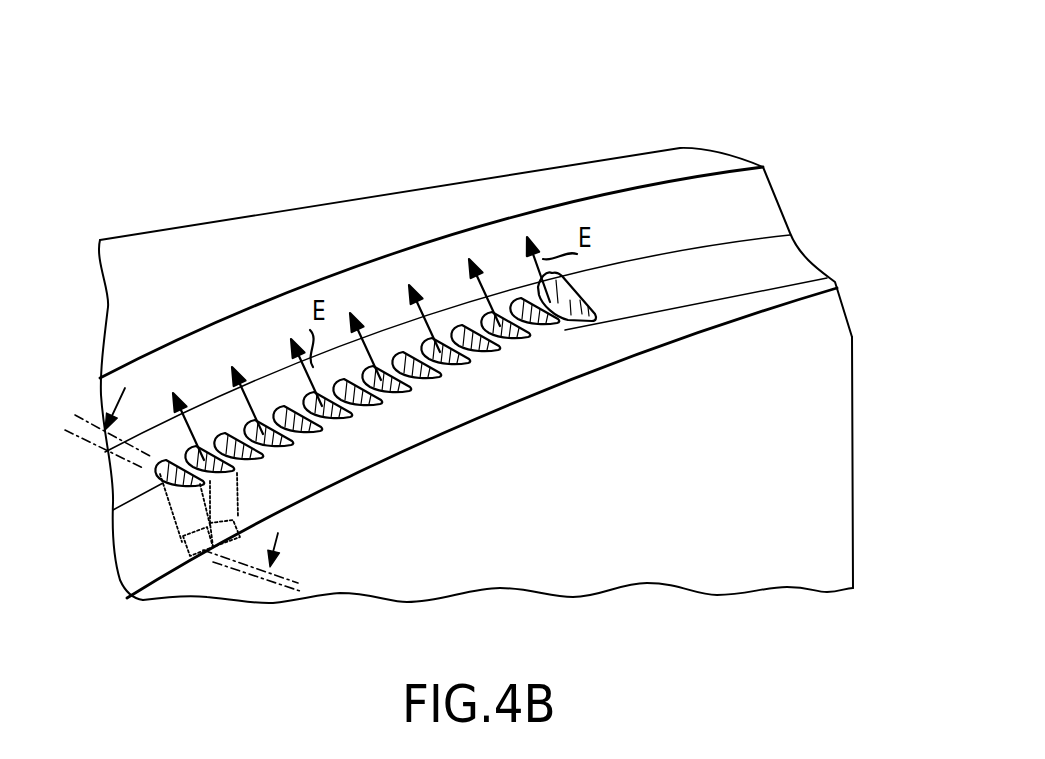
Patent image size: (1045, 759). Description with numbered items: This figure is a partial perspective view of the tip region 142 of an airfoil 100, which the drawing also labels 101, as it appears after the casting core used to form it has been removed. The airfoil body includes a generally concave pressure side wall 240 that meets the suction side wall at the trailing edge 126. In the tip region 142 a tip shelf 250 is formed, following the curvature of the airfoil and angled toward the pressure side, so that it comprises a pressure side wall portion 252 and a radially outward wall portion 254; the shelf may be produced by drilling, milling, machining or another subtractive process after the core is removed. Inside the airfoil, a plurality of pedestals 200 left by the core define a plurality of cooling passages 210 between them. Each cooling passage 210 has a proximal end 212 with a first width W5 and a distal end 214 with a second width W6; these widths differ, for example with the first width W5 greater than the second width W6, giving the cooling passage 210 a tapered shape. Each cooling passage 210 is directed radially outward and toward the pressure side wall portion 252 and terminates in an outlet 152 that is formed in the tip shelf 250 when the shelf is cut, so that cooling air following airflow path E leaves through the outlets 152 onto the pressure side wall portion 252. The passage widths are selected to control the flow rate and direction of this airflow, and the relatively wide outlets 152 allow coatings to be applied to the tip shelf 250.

The airfoil 100 is at (180, 153).
The component wall / substrate 101 is at (420, 217).
The trailing edge 126 is at (852, 377).
The tip region 142 is at (811, 222).
The outlet 152 is at (233, 470).
The pedestal 200 is at (470, 358).
The cooling passage 210 is at (237, 490).
The proximal end 212 is at (190, 543).
The distal end 214 is at (158, 474).
The pressure side wall 240 is at (732, 527).
The tip shelf 250 is at (633, 195).
The pressure side wall portion 252 is at (698, 238).
The radially outward wall portion 254 is at (660, 341).
The first width W5 is at (257, 592).
The second width W6 is at (88, 453).